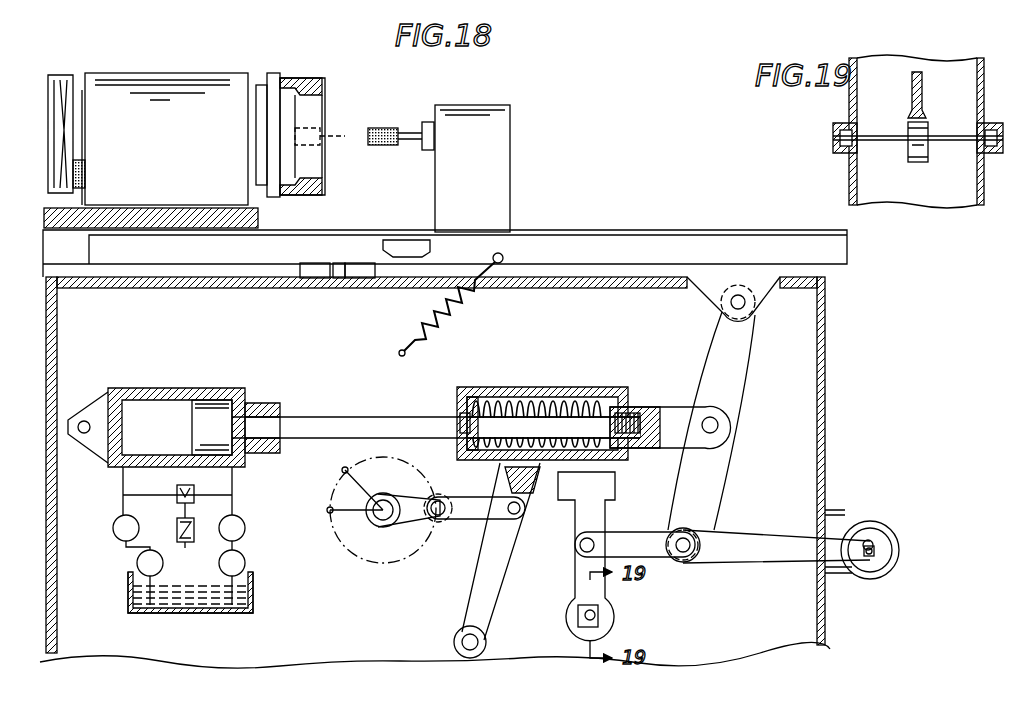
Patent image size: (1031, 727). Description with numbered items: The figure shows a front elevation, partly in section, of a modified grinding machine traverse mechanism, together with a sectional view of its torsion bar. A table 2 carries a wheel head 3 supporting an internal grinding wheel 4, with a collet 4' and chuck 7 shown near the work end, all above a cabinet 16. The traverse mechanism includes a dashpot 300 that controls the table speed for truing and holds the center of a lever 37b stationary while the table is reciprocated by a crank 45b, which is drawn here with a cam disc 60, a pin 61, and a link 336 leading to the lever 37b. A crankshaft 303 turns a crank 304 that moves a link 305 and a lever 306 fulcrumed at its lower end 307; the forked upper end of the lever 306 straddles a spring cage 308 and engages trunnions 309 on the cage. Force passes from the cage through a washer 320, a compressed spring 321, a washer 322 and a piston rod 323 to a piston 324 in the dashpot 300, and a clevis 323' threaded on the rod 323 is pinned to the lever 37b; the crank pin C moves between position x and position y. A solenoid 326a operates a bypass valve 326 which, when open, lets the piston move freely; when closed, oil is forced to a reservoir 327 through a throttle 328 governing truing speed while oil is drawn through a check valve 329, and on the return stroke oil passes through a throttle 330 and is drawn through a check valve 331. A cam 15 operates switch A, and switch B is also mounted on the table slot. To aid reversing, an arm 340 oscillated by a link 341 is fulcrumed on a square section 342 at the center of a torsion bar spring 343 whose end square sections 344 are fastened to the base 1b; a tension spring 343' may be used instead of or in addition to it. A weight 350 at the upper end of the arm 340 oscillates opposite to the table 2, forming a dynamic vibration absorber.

In FIG. 18, the table 2 is at (847, 243).
In FIG. 18, the wheel head 3 is at (500, 135).
In FIG. 18, the internal grinding wheel 4 is at (401, 127).
In FIG. 18, the workpiece collet 4' is at (323, 113).
In FIG. 18, the chuck 7 is at (325, 186).
In FIG. 18, the cam 15 is at (430, 246).
In FIG. 18, the cabinet 16 is at (825, 384).
In FIG. 18, the switch A is at (312, 263).
In FIG. 18, the switch B is at (358, 263).
In FIG. 18, the crank pin C is at (436, 505).
In FIG. 18, the crank position x is at (328, 508).
In FIG. 18, the crank position y is at (344, 468).
In FIG. 18, the dashpot 300 is at (248, 466).
In FIG. 18, the crankshaft 303 is at (383, 527).
In FIG. 18, the crank 304 is at (438, 516).
In FIG. 18, the link 305 is at (486, 492).
In FIG. 18, the lever 306 is at (480, 573).
In FIG. 18, the lower end of lever 307 is at (478, 642).
In FIG. 18, the spring cage 308 is at (603, 388).
In FIG. 18, the trunnions 309 is at (553, 400).
In FIG. 18, the washer 320 is at (615, 423).
In FIG. 18, the compressed spring 321 is at (525, 388).
In FIG. 18, the washer 322 is at (462, 412).
In FIG. 18, the piston rod 323 is at (436, 409).
In FIG. 18, the clevis 323' is at (670, 401).
In FIG. 18, the piston 324 is at (192, 436).
In FIG. 18, the bypass valve 326 is at (194, 492).
In FIG. 18, the solenoid 326a is at (194, 528).
In FIG. 18, the reservoir 327 is at (253, 596).
In FIG. 18, the throttle 328 is at (245, 530).
In FIG. 18, the check valve 329 is at (163, 568).
In FIG. 18, the throttle 330 is at (145, 516).
In FIG. 18, the check valve 331 is at (245, 563).
In FIG. 18, the link 336 is at (792, 535).
In FIG. 18, the arm 340 is at (575, 568).
In FIG. 19, the arm 340 is at (922, 92).
In FIG. 18, the link 341 is at (650, 525).
In FIG. 18, the square section 342 is at (598, 612).
In FIG. 19, the square section 342 is at (908, 152).
In FIG. 18, the torsion bar spring 343 is at (628, 622).
In FIG. 19, the torsion bar spring 343 is at (918, 123).
In FIG. 18, the tension spring 343' is at (434, 304).
In FIG. 19, the square sections 344 is at (1000, 153).
In FIG. 18, the weight 350 is at (608, 498).
In FIG. 18, the lever 37b is at (733, 472).
In FIG. 18, the crank 45b is at (885, 555).
In FIG. 18, the cam disc 60 is at (886, 527).
In FIG. 18, the cam pin 61 is at (848, 515).
In FIG. 19, the base 1b is at (984, 205).